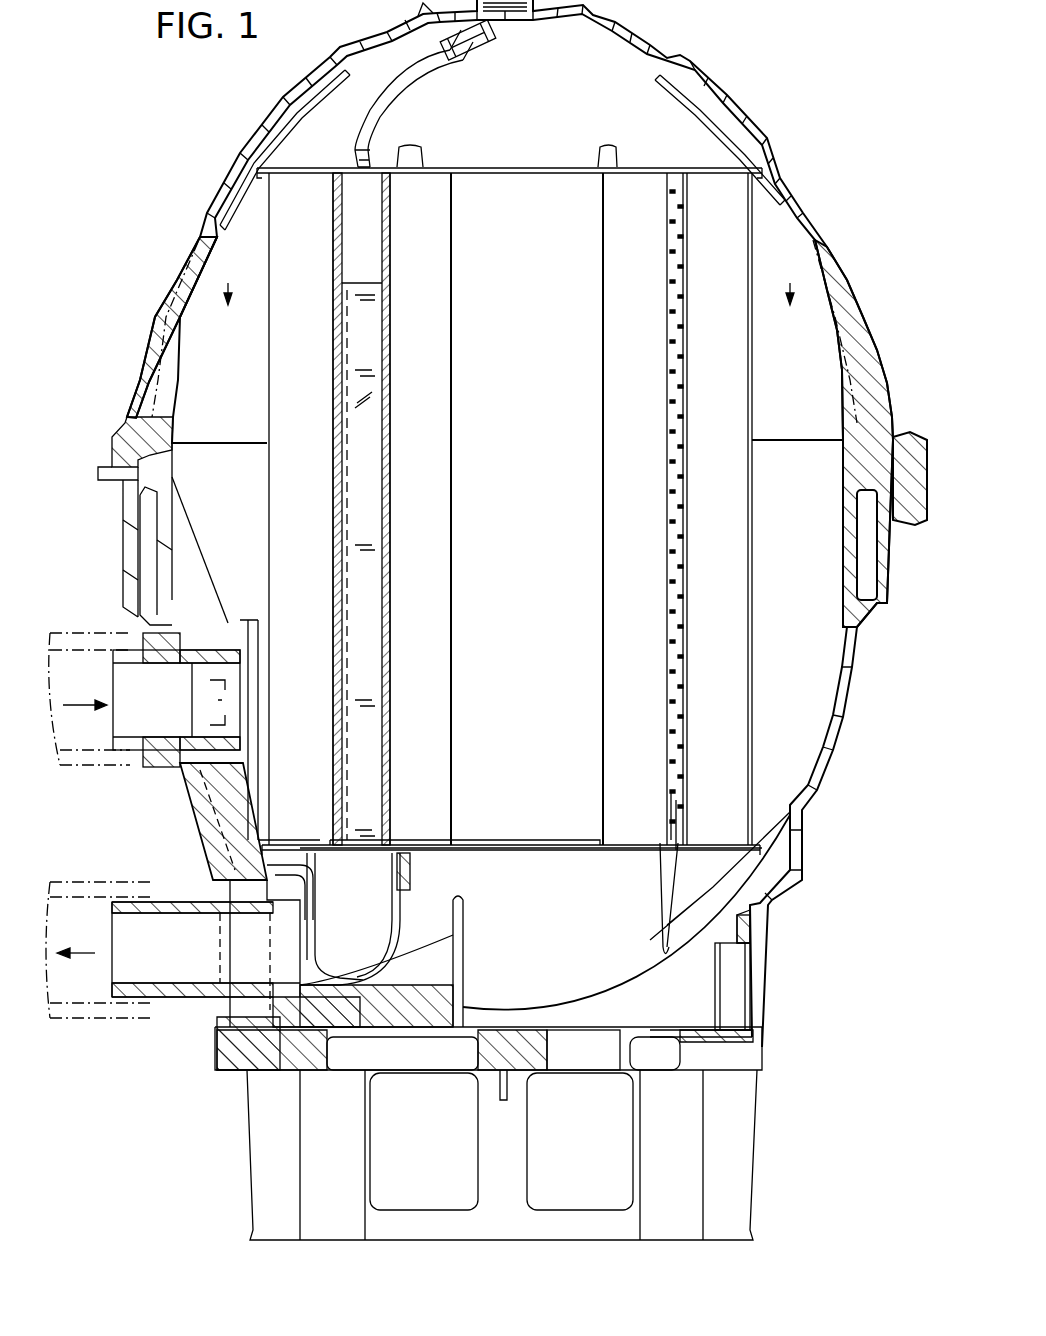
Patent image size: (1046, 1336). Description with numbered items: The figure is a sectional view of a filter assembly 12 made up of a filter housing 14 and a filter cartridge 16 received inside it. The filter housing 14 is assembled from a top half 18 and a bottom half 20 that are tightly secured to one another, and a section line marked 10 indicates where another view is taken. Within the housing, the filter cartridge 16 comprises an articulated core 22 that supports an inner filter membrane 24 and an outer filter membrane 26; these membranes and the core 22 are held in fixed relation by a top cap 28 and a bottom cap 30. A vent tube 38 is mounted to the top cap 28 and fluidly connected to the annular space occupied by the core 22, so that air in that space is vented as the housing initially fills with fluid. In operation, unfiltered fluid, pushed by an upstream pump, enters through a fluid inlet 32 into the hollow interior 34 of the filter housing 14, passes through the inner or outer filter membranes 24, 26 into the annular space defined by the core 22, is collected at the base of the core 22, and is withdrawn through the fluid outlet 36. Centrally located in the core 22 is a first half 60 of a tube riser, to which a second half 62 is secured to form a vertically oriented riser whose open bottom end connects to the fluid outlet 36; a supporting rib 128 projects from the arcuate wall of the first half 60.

The section line 10 is at (260, 283).
The filter assembly 12 is at (786, 70).
The filter housing 14 is at (803, 200).
The filter cartridge 16 is at (643, 166).
The top half 18 is at (265, 125).
The bottom half 20 is at (835, 738).
The core 22 is at (390, 428).
The inner filter membrane 24 is at (430, 277).
The outer filter membrane 26 is at (752, 612).
The top cap 28 is at (477, 163).
The bottom cap 30 is at (640, 855).
The fluid inlet 32 is at (110, 680).
The hollow interior 34 is at (200, 390).
The fluid outlet 36 is at (108, 912).
The vent tube 38 is at (393, 88).
The first half of tube riser 60 is at (340, 337).
The second half of tube riser 62 is at (392, 312).
The supporting rib 128 is at (367, 398).